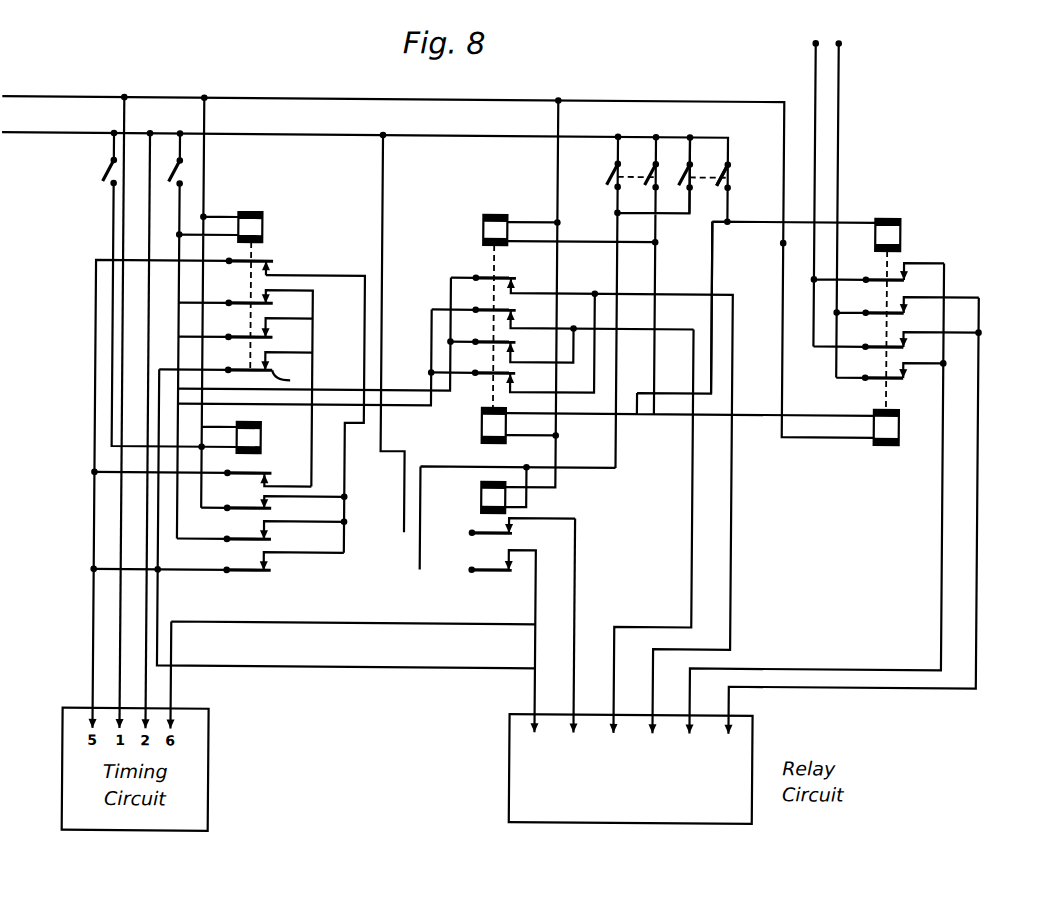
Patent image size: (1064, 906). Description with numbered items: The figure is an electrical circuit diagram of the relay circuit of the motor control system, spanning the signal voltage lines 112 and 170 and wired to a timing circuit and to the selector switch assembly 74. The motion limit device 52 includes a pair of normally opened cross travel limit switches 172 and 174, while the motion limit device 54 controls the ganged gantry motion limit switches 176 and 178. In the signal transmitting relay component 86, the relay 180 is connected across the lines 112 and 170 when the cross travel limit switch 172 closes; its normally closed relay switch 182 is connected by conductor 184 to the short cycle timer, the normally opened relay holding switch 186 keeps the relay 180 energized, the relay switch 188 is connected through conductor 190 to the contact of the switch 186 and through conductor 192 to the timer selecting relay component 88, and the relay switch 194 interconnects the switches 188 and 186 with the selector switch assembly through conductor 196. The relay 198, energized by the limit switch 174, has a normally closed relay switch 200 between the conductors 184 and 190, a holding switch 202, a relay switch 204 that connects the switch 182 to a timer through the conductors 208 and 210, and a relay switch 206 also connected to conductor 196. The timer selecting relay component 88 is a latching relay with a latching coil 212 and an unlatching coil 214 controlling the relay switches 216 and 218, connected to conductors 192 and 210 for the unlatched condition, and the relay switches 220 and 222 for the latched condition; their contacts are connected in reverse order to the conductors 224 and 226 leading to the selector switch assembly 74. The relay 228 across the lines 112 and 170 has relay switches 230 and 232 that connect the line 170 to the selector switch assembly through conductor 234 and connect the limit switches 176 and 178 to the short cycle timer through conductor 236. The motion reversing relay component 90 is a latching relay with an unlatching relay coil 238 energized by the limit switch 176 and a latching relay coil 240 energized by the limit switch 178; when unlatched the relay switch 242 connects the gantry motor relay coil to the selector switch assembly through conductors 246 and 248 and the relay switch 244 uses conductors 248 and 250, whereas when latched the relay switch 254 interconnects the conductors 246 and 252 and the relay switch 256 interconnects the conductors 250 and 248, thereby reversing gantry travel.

The signal voltage line 112 is at (62, 98).
The signal line 170 is at (266, 134).
The motion limit device 52 is at (88, 178).
The cross travel limit switch 174 is at (99, 181).
The cross travel limit switch 172 is at (180, 175).
The relay 180 is at (262, 226).
The signal transmitting relay component 86 is at (312, 231).
The normally closed relay switch 182 is at (258, 266).
The conductor 208 is at (346, 438).
The normally opened relay holding switch 186 is at (272, 306).
The normally opened relay switch 188 is at (272, 341).
The conductor 190 is at (272, 366).
The normally opened relay switch 194 is at (290, 382).
The conductor 192 is at (401, 389).
The conductor 210 is at (384, 407).
The relay 198 is at (258, 440).
The conductor 184 is at (93, 487).
The normally closed relay switch 200 is at (253, 470).
The normally opened relay switch 202 is at (272, 512).
The normally opened relay switch 204 is at (272, 543).
The normally opened relay switch 206 is at (237, 574).
The conductor 196 is at (245, 669).
The conductor 236 is at (300, 625).
The latching coil 212 is at (481, 228).
The timer selecting relay component 88 is at (456, 246).
The relay switch 216 is at (490, 277).
The relay switch 218 is at (513, 302).
The relay switch 220 is at (503, 344).
The relay switch 222 is at (518, 377).
The unlatching coil 214 is at (481, 427).
The relay 228 is at (482, 498).
The normally opened relay switch 230 is at (505, 537).
The normally opened relay switch 232 is at (498, 574).
The conductor 234 is at (578, 587).
The conductor 226 is at (690, 437).
The conductor 224 is at (734, 411).
The gantry motion limit switch 178 is at (610, 199).
The motion limit device 54 is at (746, 167).
The gantry motion limit switch 176 is at (709, 192).
The conductor 246 is at (812, 93).
The conductor 250 is at (838, 168).
The unlatching relay coil 238 is at (900, 232).
The motion reversing relay component 90 is at (948, 283).
The relay switch 254 is at (903, 279).
The relay switch 256 is at (903, 312).
The relay switch 242 is at (903, 346).
The relay switch 244 is at (903, 377).
The latching relay coil 240 is at (900, 428).
The conductor 248 is at (977, 512).
The conductor 252 is at (848, 667).
The selector switch assembly 74 is at (503, 771).